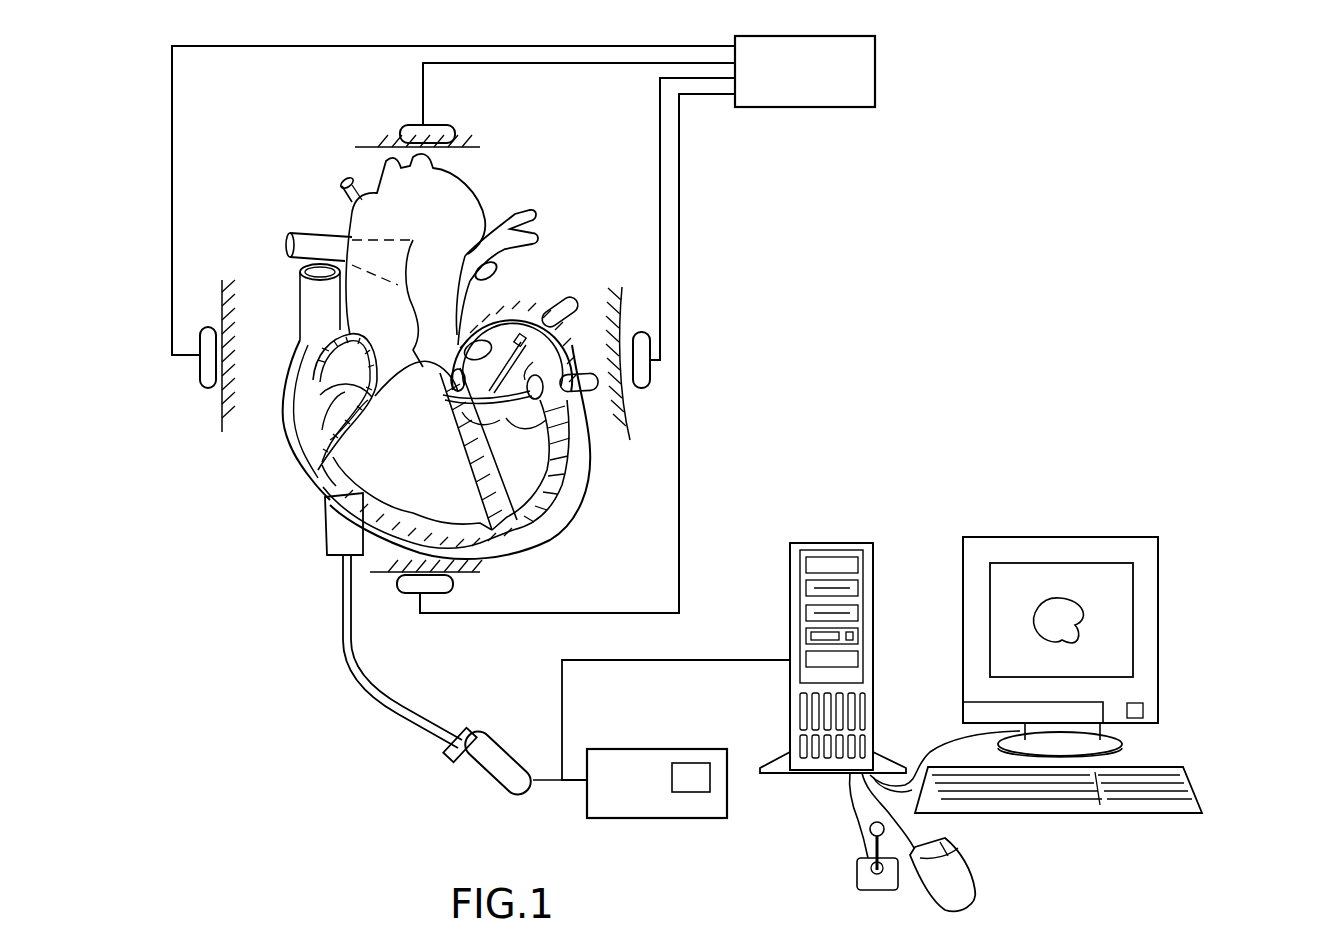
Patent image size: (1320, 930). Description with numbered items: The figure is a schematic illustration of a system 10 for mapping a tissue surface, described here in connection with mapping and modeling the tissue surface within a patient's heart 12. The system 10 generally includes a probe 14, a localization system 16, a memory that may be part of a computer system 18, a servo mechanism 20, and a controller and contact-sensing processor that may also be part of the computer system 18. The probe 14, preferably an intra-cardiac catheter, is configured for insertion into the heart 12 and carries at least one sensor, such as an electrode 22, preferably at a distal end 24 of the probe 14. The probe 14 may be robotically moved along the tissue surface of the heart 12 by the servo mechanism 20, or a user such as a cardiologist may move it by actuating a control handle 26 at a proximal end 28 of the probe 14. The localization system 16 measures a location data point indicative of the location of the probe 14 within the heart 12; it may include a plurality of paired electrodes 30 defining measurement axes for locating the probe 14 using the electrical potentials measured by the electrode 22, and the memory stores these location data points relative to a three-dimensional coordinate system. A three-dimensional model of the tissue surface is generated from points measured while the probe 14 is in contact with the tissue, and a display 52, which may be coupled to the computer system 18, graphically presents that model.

The system 10 is at (905, 222).
The heart 12 is at (448, 356).
The probe 14 is at (358, 675).
The localization system 16 is at (795, 107).
The computer system 18 is at (875, 565).
The servo mechanism 20 is at (640, 758).
The electrode 22 is at (527, 322).
The distal end 24 is at (525, 370).
The control handle 26 is at (490, 770).
The proximal end 28 is at (445, 752).
The paired electrodes 30 is at (438, 132).
The display 52 is at (1148, 572).